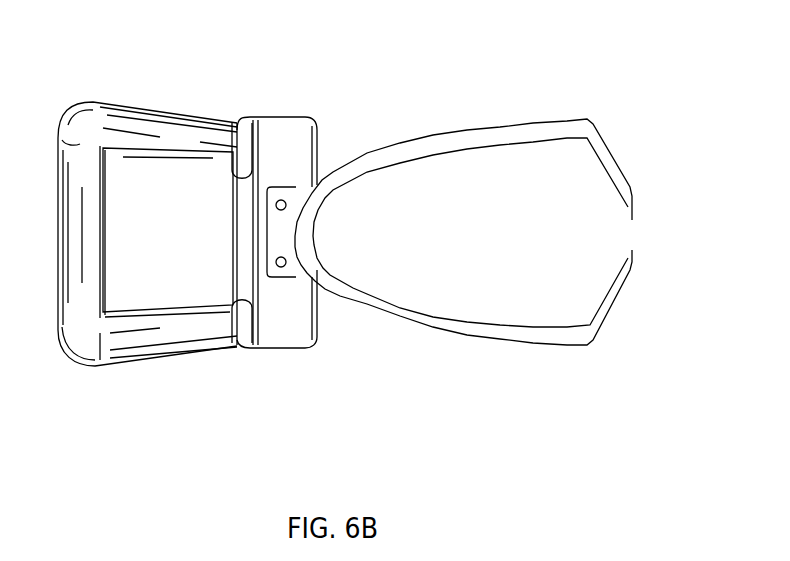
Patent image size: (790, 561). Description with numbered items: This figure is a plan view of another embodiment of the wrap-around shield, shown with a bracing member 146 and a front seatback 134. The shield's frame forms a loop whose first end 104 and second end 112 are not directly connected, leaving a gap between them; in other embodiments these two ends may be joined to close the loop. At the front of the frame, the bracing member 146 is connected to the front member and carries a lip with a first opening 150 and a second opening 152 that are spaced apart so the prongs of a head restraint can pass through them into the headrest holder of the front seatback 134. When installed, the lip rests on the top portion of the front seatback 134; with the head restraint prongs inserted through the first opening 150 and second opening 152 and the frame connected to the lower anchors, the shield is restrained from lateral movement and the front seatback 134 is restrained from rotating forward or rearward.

The first end 104 is at (618, 157).
The second end 112 is at (613, 313).
The front seatback 134 is at (235, 145).
The bracing member 146 is at (297, 200).
The first opening 150 is at (282, 198).
The second opening 152 is at (283, 263).